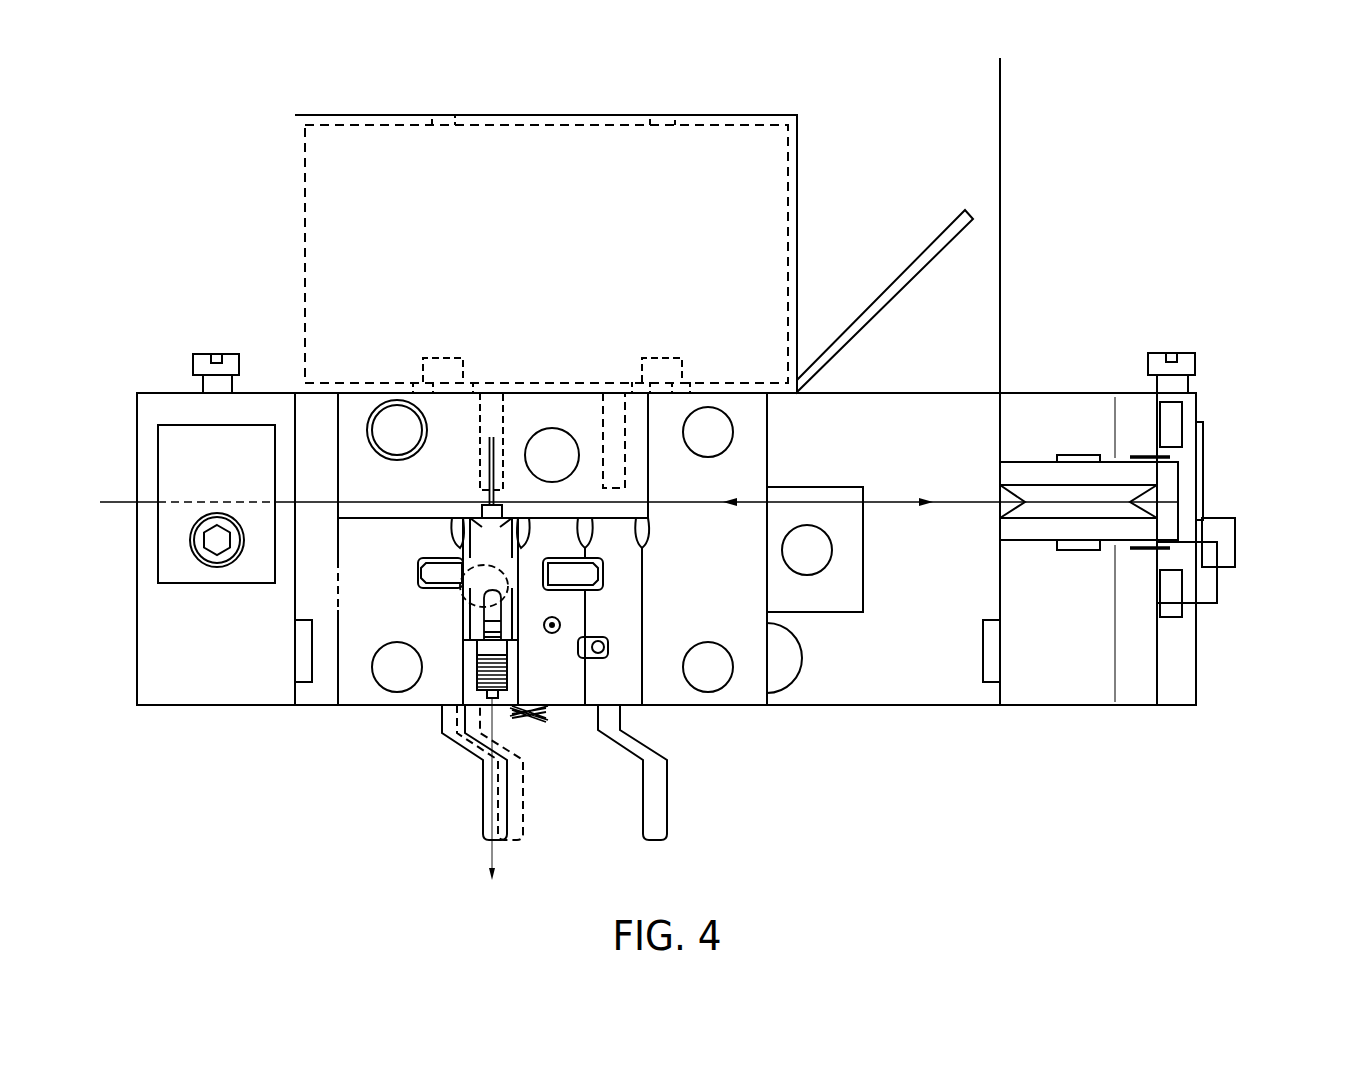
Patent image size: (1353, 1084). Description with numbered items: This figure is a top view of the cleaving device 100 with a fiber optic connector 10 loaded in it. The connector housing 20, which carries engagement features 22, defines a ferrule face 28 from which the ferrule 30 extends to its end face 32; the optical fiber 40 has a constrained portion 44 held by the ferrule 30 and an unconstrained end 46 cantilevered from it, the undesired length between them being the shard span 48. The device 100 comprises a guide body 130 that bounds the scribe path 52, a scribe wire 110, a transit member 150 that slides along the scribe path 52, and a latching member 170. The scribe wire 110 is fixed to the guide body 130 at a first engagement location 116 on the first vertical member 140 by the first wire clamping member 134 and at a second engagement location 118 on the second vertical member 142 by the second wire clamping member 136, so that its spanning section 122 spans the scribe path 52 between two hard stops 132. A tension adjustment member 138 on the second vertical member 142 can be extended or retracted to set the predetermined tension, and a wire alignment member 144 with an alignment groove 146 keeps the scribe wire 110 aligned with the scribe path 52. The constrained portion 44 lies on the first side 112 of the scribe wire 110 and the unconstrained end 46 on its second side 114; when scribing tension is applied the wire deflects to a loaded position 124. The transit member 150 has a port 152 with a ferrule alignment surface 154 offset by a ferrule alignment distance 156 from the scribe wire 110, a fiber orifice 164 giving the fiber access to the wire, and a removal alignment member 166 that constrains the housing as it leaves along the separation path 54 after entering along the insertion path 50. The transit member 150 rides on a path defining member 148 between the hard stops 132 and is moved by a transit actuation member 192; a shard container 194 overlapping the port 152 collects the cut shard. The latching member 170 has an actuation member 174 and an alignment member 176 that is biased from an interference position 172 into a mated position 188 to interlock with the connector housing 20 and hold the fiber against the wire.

The fiber optic connector 10 is at (452, 664).
The connector housing 20 is at (470, 623).
The engagement features 22 is at (490, 570).
The ferrule face 28 is at (470, 513).
The ferrule 30 is at (490, 520).
The end face 32 is at (480, 515).
The optical fiber 40 is at (497, 477).
The constrained portion 44 is at (518, 508).
The unconstrained end 46 is at (491, 424).
The shard span 48 is at (603, 447).
The insertion path 50 is at (552, 634).
The scribe path 52 is at (800, 487).
The separation path 54 is at (495, 862).
The device 100 is at (1224, 331).
The scribe wire 110 is at (976, 502).
The first side 112 is at (950, 530).
The second side 114 is at (937, 485).
The first engagement location 116 is at (290, 510).
The second engagement location 118 is at (1198, 510).
The spanning section 122 is at (295, 102).
The loaded position 124 is at (357, 493).
The guide body 130 is at (835, 705).
The hard stops 132 is at (293, 660).
The first wire clamping member 134 is at (168, 470).
The second wire clamping member 136 is at (1203, 450).
The tension adjustment member 138 is at (1170, 477).
The first vertical member 140 is at (237, 705).
The second vertical member 142 is at (1140, 705).
The wire alignment member 144 is at (1085, 462).
The alignment groove 146 is at (1093, 512).
The path defining member 148 is at (835, 600).
The transit member 150 is at (745, 705).
The port 152 is at (452, 522).
The ferrule alignment surface 154 is at (462, 522).
The ferrule alignment distance 156 is at (655, 520).
The fiber orifice 164 is at (503, 460).
The removal alignment member 166 is at (520, 712).
The latching member 170 is at (404, 602).
The interference position 172 is at (462, 598).
The actuation member 174 is at (468, 743).
The alignment member 176 is at (448, 573).
The mated position 188 is at (412, 576).
The transit actuation member 192 is at (397, 417).
The shard container 194 is at (293, 188).